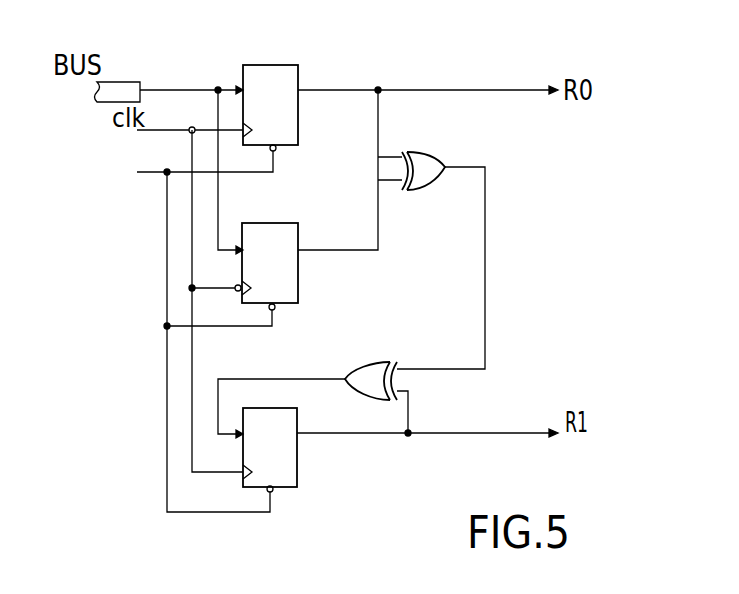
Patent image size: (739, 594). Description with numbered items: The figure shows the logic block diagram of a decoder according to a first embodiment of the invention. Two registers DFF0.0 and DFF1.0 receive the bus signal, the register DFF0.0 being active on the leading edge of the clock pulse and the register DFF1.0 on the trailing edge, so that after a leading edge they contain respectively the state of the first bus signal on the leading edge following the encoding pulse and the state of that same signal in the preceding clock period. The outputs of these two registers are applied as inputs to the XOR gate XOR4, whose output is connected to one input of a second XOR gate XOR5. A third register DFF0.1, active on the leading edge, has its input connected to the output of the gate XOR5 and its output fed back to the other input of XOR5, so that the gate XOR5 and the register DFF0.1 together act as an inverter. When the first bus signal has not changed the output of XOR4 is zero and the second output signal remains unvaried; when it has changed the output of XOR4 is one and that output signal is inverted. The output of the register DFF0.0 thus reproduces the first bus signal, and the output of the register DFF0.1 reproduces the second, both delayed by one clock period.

The register DFF0.0 is at (271, 86).
The register DFF1.0 is at (267, 245).
The third register DFF0.1 is at (266, 433).
The XOR gate XOR4 is at (430, 152).
The XOR gate XOR5 is at (374, 361).